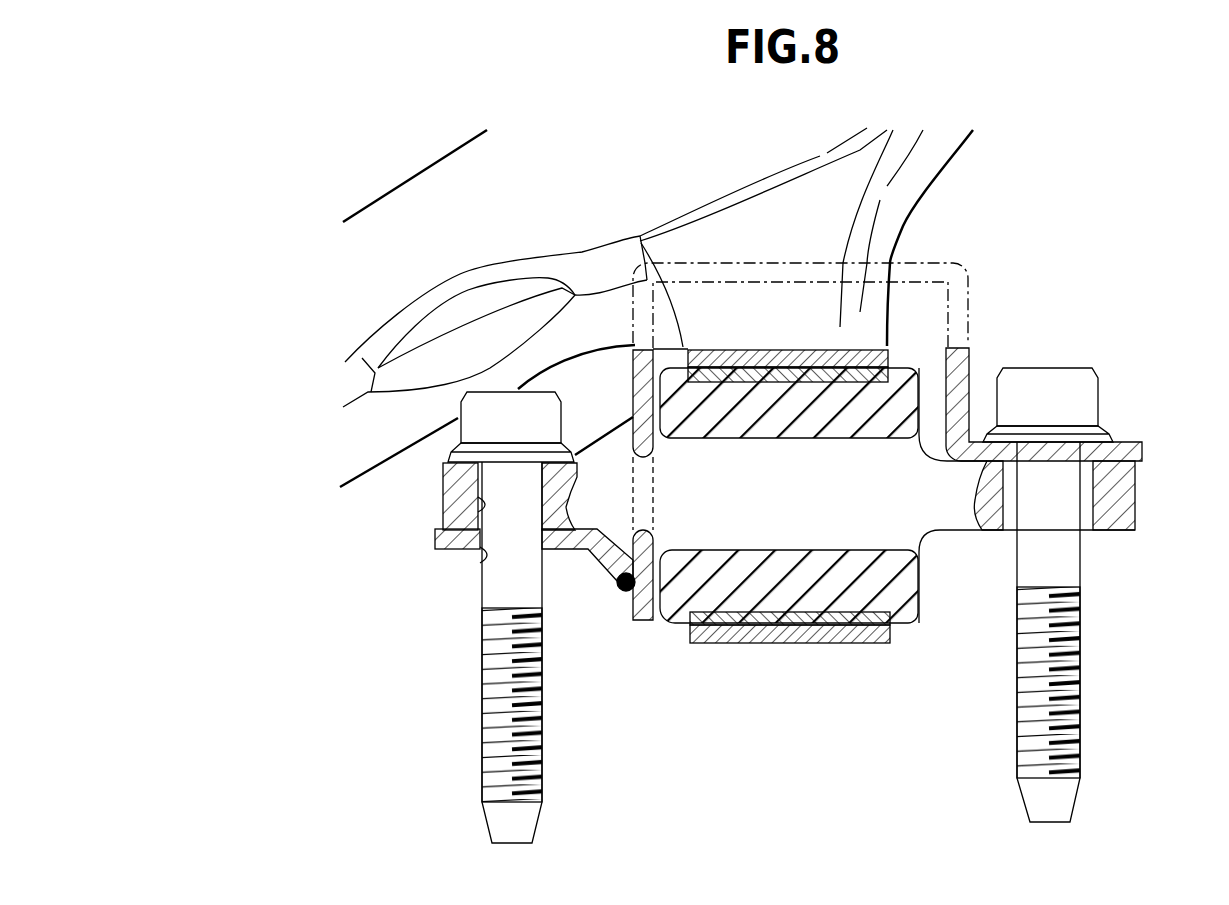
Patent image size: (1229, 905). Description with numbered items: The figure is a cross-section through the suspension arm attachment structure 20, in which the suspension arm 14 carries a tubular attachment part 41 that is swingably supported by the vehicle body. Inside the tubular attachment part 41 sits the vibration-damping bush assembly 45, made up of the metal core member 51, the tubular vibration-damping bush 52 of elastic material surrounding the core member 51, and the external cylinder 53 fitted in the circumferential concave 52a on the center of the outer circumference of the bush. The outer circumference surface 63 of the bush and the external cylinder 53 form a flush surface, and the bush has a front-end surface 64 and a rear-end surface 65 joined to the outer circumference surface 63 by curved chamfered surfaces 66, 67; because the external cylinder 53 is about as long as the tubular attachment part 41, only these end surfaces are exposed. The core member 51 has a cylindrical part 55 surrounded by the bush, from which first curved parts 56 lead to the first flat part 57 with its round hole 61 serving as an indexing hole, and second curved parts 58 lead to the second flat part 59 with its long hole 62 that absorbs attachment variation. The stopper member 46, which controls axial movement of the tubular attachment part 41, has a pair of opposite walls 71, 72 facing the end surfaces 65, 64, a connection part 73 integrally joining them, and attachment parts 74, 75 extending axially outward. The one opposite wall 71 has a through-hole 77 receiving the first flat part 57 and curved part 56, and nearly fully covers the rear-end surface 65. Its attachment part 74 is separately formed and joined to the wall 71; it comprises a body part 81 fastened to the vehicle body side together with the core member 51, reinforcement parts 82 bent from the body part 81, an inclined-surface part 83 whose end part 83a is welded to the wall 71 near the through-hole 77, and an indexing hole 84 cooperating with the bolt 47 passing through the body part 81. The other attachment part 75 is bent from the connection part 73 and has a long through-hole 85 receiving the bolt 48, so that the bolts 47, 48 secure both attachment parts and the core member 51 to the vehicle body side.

The suspension arm attachment structure 20 is at (317, 75).
The suspension arm 14 is at (432, 172).
The bolt 47 is at (503, 393).
The connection part 73 is at (777, 263).
The stopper member 46 is at (923, 260).
The opposite wall 71 is at (740, 342).
The first curved part 56 is at (627, 463).
The opposite wall 72 is at (957, 372).
The attachment part 75 is at (1140, 443).
The chamfered surface 66 is at (910, 382).
The cylindrical part 55 is at (823, 447).
The end part 83a is at (655, 432).
The second curved part 58 is at (937, 447).
The tubular attachment part 41 is at (770, 643).
The through-hole 77 is at (660, 547).
The front-end surface 64 is at (920, 573).
The vibration-damping bush 52 is at (907, 617).
The circumferential concave 52a is at (800, 617).
The external cylinder 53 is at (840, 617).
The core member 51 is at (920, 607).
The vibration-damping bush assembly 45 is at (992, 708).
The outer circumference surface 63 is at (663, 620).
The chamfered surface 67 is at (657, 617).
The rear-end surface 65 is at (628, 598).
The reinforcement part 82 is at (583, 455).
The first flat part 57 is at (463, 485).
The inclined-surface part 83 is at (593, 540).
The indexing hole 84 is at (480, 560).
The round hole 61 is at (473, 510).
The body part 81 is at (437, 540).
The attachment part 74 is at (450, 555).
The bolt 48 is at (1030, 397).
The long hole 62 is at (1083, 497).
The second flat part 59 is at (1113, 478).
The through-hole 85 is at (1103, 453).